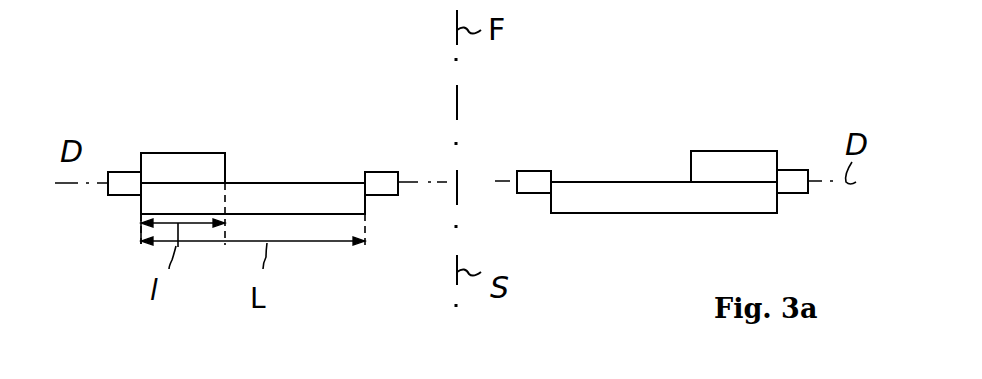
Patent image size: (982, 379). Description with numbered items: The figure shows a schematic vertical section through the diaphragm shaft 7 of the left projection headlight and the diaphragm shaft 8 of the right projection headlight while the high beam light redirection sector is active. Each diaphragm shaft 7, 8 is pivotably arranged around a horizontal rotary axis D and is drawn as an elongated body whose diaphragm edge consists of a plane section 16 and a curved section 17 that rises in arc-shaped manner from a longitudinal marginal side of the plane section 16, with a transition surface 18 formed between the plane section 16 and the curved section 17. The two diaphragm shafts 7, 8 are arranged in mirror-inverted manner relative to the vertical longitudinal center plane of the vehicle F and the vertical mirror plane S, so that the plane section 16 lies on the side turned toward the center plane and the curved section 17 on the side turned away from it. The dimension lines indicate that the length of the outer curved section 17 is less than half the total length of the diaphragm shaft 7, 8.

The plane section 16 is at (312, 183).
The curved section 17 is at (190, 153).
The transition surface 18 is at (226, 182).
The diaphragm shaft 7 is at (349, 256).
The diaphragm shaft 8 is at (647, 86).